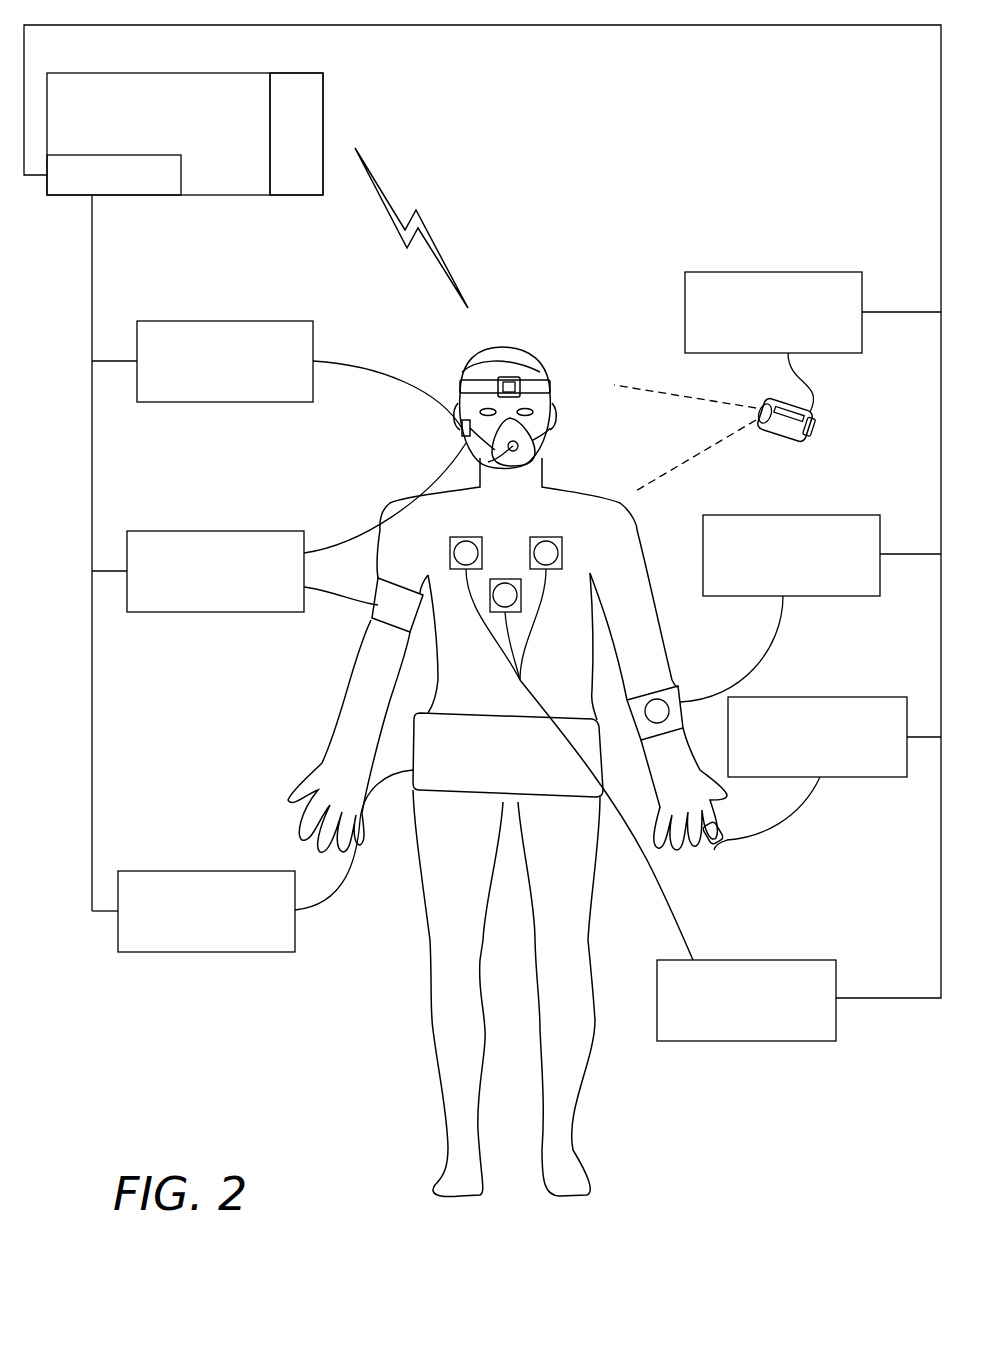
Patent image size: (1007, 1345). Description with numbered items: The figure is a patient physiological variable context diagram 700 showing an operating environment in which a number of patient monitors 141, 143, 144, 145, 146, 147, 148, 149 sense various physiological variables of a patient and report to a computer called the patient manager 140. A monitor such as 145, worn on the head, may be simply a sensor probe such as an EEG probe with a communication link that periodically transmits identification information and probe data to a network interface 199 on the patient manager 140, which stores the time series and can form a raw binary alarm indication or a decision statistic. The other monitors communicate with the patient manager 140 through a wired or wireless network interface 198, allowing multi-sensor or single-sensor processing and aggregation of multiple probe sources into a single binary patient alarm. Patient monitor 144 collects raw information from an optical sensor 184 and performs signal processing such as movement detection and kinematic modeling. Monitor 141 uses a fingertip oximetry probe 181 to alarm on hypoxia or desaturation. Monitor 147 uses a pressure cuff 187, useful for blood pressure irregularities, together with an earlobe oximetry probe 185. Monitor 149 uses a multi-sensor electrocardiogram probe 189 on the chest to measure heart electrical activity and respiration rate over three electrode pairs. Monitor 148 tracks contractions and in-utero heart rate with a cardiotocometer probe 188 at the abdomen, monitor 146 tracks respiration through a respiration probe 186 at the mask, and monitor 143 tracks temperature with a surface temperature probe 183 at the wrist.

The patient manager 140 is at (175, 73).
The wired or wireless network interface 198 is at (108, 155).
The network interface 199 is at (290, 73).
The patient monitor 141 is at (825, 697).
The patient monitor 143 is at (800, 515).
The patient monitor 144 is at (775, 272).
The patient monitor 146 is at (228, 321).
The patient monitor 147 is at (208, 531).
The patient monitor 148 is at (198, 871).
The patient monitor 149 is at (763, 960).
The patient monitor 145 is at (510, 378).
The fingertip oximetry probe 181 is at (720, 843).
The surface temperature probe 183 is at (638, 730).
The optical sensor 184 is at (790, 440).
The earlobe oximetry probe 185 is at (462, 430).
The respiration probe 186 is at (540, 445).
The pressure cuff 187 is at (372, 592).
The cardiotocometer probe 188 is at (416, 744).
The multi-sensor electrocardiogram probe 189 is at (650, 866).
The patient physiological variable context diagram 700 is at (232, 1052).